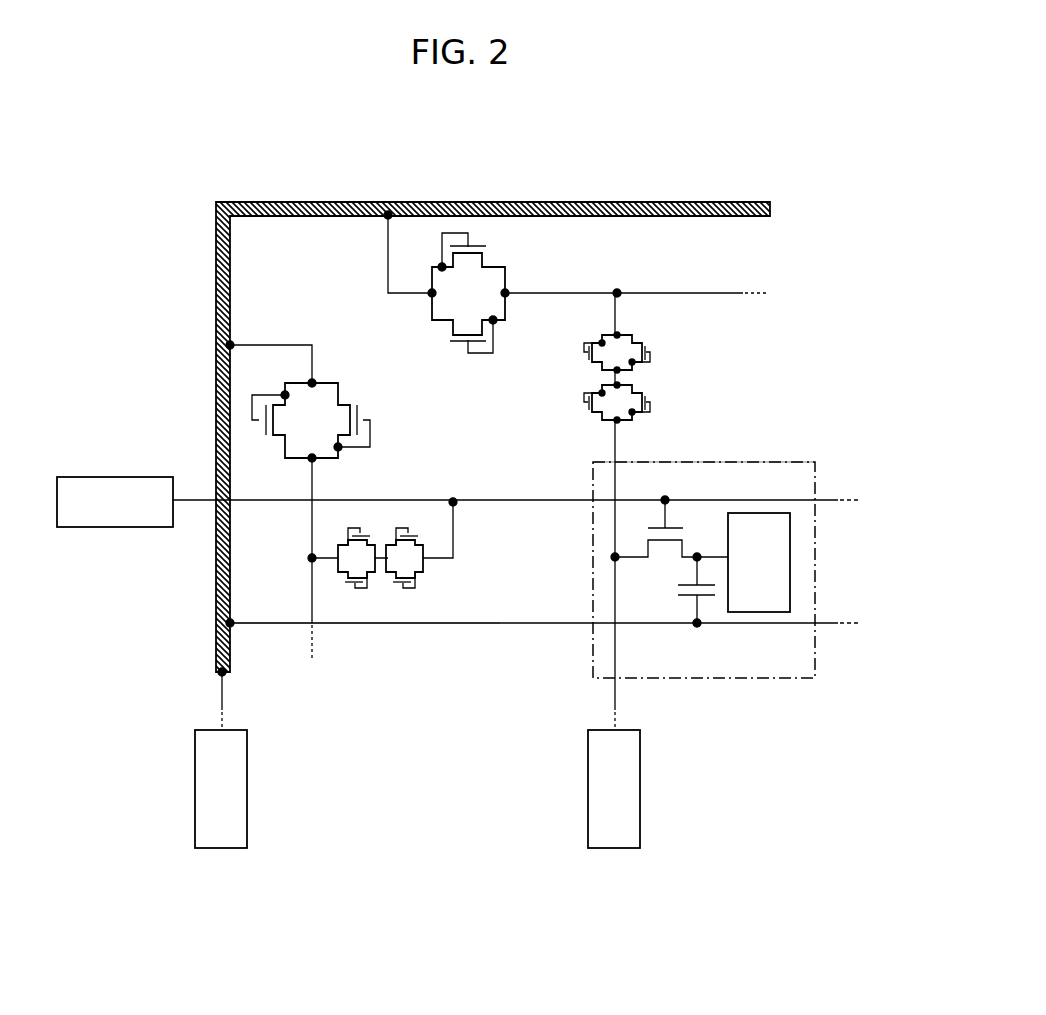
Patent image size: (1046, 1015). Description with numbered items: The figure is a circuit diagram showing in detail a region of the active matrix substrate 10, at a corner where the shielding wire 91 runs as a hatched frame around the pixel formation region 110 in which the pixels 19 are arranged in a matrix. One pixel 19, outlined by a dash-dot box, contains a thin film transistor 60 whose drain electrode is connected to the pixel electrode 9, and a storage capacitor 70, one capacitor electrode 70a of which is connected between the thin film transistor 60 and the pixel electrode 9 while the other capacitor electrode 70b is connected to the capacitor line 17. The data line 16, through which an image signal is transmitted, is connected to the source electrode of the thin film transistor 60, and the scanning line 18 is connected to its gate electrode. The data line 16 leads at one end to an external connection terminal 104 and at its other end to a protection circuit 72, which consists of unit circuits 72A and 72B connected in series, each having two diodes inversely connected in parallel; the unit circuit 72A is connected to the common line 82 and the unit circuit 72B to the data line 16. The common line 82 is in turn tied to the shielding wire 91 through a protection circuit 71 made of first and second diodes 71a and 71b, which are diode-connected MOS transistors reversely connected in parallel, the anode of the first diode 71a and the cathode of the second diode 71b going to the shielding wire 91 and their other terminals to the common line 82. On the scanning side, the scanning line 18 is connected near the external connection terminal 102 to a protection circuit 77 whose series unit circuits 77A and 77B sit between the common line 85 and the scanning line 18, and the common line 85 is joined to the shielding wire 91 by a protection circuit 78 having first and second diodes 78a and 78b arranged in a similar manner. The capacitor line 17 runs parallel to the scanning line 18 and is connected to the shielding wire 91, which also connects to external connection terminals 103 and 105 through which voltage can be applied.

The active matrix substrate 10 is at (797, 242).
The shielding wire 91 is at (707, 202).
The common line 82 is at (692, 293).
The protection circuit 71 is at (504, 310).
The first diode 71a is at (490, 252).
The second diode 71b is at (453, 343).
The protection circuit 72 is at (680, 358).
The unit circuit 72A is at (650, 345).
The unit circuit 72B is at (658, 391).
The protection circuit 78 is at (315, 396).
The first diode 78a is at (268, 438).
The second diode 78b is at (358, 404).
The protection circuit 77 is at (392, 504).
The unit circuit 77A is at (374, 540).
The unit circuit 77B is at (377, 456).
The common line 85 is at (311, 585).
The scanning line 18 is at (520, 503).
The capacitor line 17 is at (475, 625).
The data line 16 is at (612, 645).
The pixel 19 is at (770, 486).
The pixel formation region 110 is at (718, 461).
The thin film transistor 60 is at (675, 522).
The storage capacitor 70 is at (679, 635).
The capacitor electrode 70a is at (680, 577).
The capacitor electrode 70b is at (690, 600).
The pixel electrode 9 is at (768, 613).
The external connection terminal 102 is at (127, 528).
The external connection terminal 103 is at (278, 758).
The external connection terminal 105 is at (247, 786).
The external connection terminal 104 is at (640, 786).